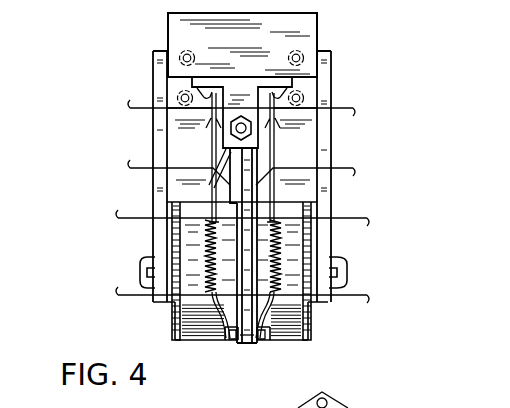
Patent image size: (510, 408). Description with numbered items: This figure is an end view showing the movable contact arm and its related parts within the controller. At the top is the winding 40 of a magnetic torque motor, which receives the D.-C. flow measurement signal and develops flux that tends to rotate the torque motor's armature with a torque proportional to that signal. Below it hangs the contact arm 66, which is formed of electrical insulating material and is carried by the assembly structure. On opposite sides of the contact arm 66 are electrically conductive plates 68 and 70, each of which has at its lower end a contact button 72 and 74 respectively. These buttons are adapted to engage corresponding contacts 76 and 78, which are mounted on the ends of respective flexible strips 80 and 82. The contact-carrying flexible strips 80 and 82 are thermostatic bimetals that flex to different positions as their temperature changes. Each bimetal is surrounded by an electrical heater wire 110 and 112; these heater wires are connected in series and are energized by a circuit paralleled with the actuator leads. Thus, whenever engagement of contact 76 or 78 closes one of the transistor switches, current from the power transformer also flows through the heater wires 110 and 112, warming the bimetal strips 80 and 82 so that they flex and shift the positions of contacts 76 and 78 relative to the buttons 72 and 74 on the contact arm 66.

The winding 40 is at (290, 338).
The contact arm 66 is at (250, 343).
The electrically conductive plate 68 is at (257, 265).
The electrically conductive plate 70 is at (233, 250).
The contact button 72 is at (263, 342).
The contact button 74 is at (235, 342).
The contact 76 is at (268, 341).
The contact 78 is at (228, 341).
The flexible strip 80 is at (278, 315).
The flexible strip 82 is at (192, 322).
The electrical heater wire 110 is at (278, 233).
The electrical heater wire 112 is at (180, 233).